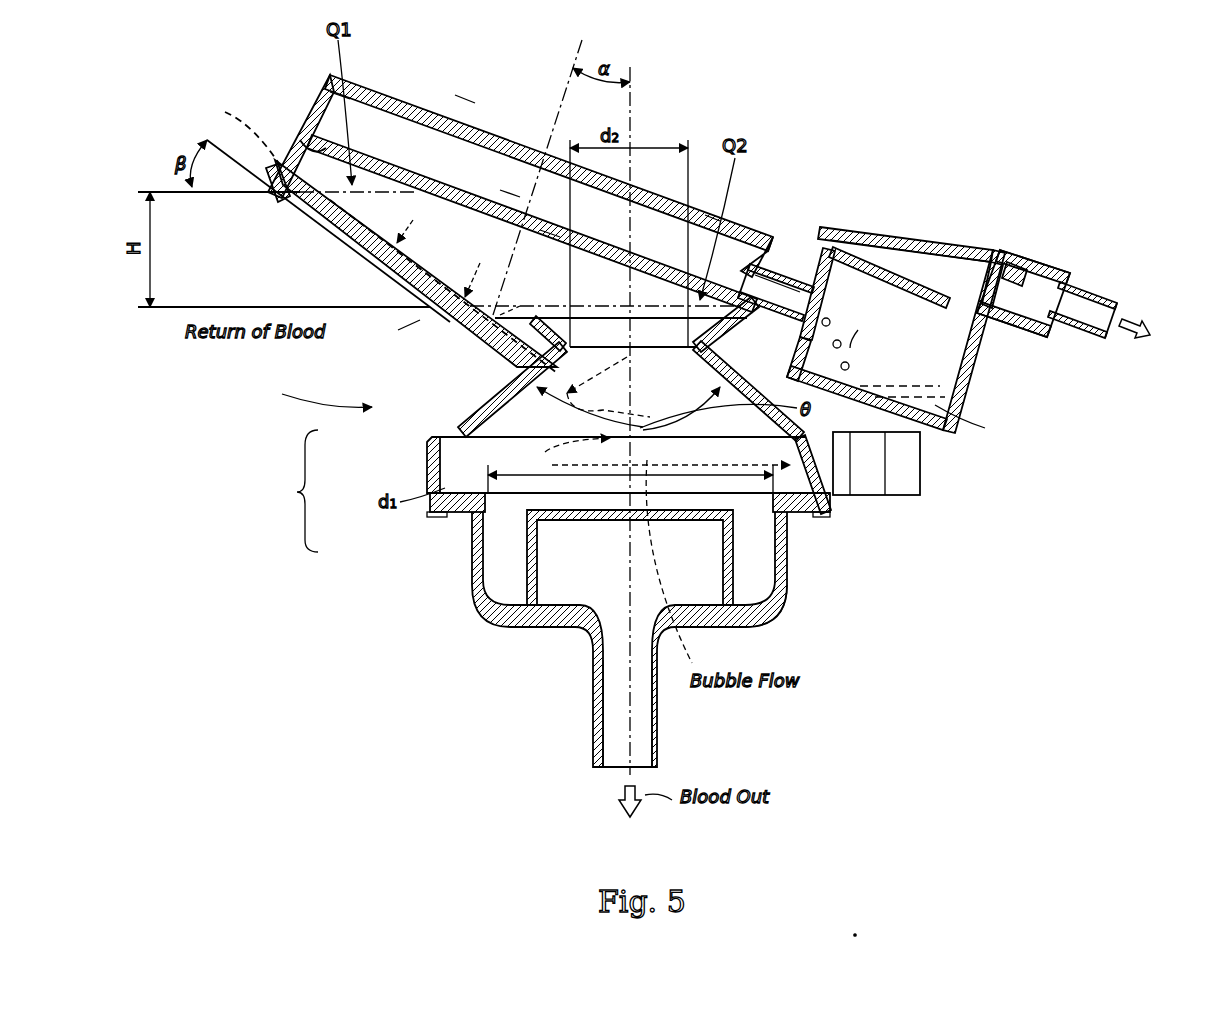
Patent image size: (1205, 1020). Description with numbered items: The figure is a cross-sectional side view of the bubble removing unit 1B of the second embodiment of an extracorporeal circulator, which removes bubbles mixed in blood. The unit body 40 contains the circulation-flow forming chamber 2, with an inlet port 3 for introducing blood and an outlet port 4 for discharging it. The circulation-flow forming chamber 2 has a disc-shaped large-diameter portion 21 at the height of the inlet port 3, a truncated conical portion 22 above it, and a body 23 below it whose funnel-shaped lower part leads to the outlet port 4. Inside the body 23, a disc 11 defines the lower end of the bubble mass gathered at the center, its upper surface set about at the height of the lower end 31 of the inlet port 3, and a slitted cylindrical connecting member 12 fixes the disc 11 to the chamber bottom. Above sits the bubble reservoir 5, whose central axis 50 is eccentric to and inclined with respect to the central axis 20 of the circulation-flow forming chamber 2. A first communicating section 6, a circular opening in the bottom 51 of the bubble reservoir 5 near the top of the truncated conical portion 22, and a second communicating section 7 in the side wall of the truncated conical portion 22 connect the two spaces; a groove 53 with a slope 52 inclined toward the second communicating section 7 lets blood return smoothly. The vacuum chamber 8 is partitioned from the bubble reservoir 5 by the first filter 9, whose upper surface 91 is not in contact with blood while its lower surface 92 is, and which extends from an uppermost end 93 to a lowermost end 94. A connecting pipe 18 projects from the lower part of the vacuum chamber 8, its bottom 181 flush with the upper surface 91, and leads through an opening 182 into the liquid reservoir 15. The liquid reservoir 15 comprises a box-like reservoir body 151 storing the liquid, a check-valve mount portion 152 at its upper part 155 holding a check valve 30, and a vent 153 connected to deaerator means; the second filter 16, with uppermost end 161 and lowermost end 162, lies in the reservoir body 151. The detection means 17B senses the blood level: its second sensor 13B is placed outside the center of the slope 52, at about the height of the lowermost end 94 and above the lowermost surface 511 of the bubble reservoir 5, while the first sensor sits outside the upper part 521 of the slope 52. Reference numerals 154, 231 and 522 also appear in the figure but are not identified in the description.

The bubble removing unit 1B is at (462, 98).
The circulation-flow forming chamber 2 is at (584, 554).
The inlet port 3 is at (905, 480).
The outlet port 4 is at (645, 742).
The bubble reservoir 5 is at (507, 190).
The first communicating section 6 is at (712, 222).
The second communicating section 7 is at (547, 357).
The vacuum chamber 8 is at (396, 130).
The first filter 9 is at (548, 178).
The disc 11 is at (735, 550).
The connecting member 12 is at (783, 590).
The second sensor 13B is at (447, 320).
The liquid reservoir 15 is at (983, 298).
The second filter 16 is at (935, 290).
The detection means 17B is at (230, 130).
The connecting pipe 18 is at (812, 256).
The central axis 20 is at (640, 98).
The large-diameter portion 21 is at (455, 465).
The truncated conical portion 22 is at (430, 425).
The body 23 is at (472, 560).
The check valve 30 is at (1040, 292).
The lower end 31 is at (826, 478).
The unit body 40 is at (310, 394).
The central axis 50 is at (560, 64).
The bottom 51 is at (364, 135).
The slope 52 is at (355, 255).
The groove 53 is at (318, 237).
The upper surface 91 is at (420, 165).
The lower surface 92 is at (289, 128).
The uppermost end 93 is at (316, 103).
The lowermost end 94 is at (752, 250).
The reservoir body 151 is at (955, 412).
The check-valve mount portion 152 is at (1000, 300).
The vent 153 is at (1108, 305).
The fitting 154 is at (1030, 268).
The upper part 155 is at (918, 237).
The uppermost end 161 is at (848, 235).
The lowermost end 162 is at (990, 262).
The bottom 181 is at (800, 282).
The opening 182 is at (838, 255).
The bottom plate 231 is at (755, 612).
The lowermost surface 511 is at (508, 318).
The upper part 521 is at (268, 198).
The tube end 522 is at (398, 330).